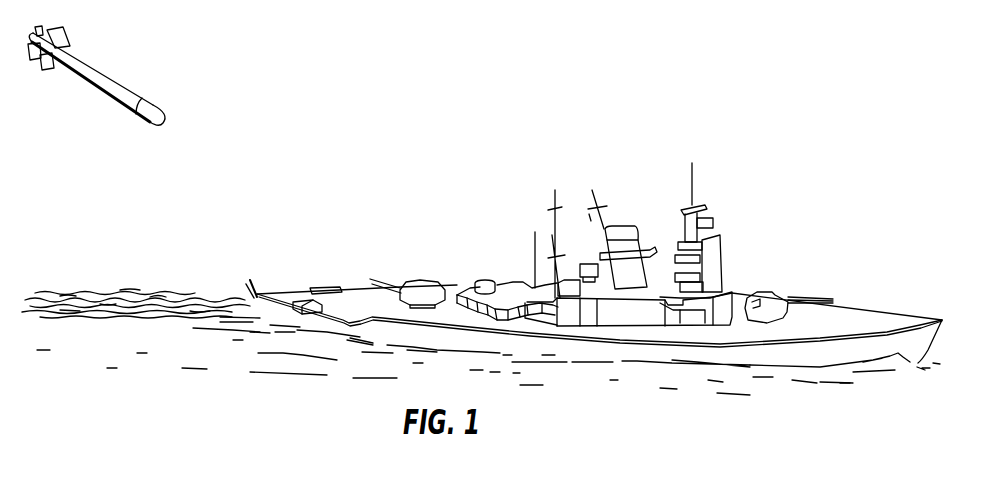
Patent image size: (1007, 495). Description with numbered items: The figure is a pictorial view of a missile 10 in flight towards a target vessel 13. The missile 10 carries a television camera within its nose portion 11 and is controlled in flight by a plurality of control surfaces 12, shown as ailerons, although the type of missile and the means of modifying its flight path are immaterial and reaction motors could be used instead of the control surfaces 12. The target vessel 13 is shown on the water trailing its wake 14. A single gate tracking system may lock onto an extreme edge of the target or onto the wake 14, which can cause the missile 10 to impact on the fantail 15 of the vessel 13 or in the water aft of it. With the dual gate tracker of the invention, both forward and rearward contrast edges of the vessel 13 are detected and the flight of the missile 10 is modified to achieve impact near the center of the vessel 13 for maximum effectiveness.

The missile 10 is at (123, 87).
The nose portion 11 is at (152, 124).
The control surfaces 12 is at (62, 38).
The target vessel 13 is at (724, 238).
The wake 14 is at (176, 300).
The fantail 15 is at (263, 291).